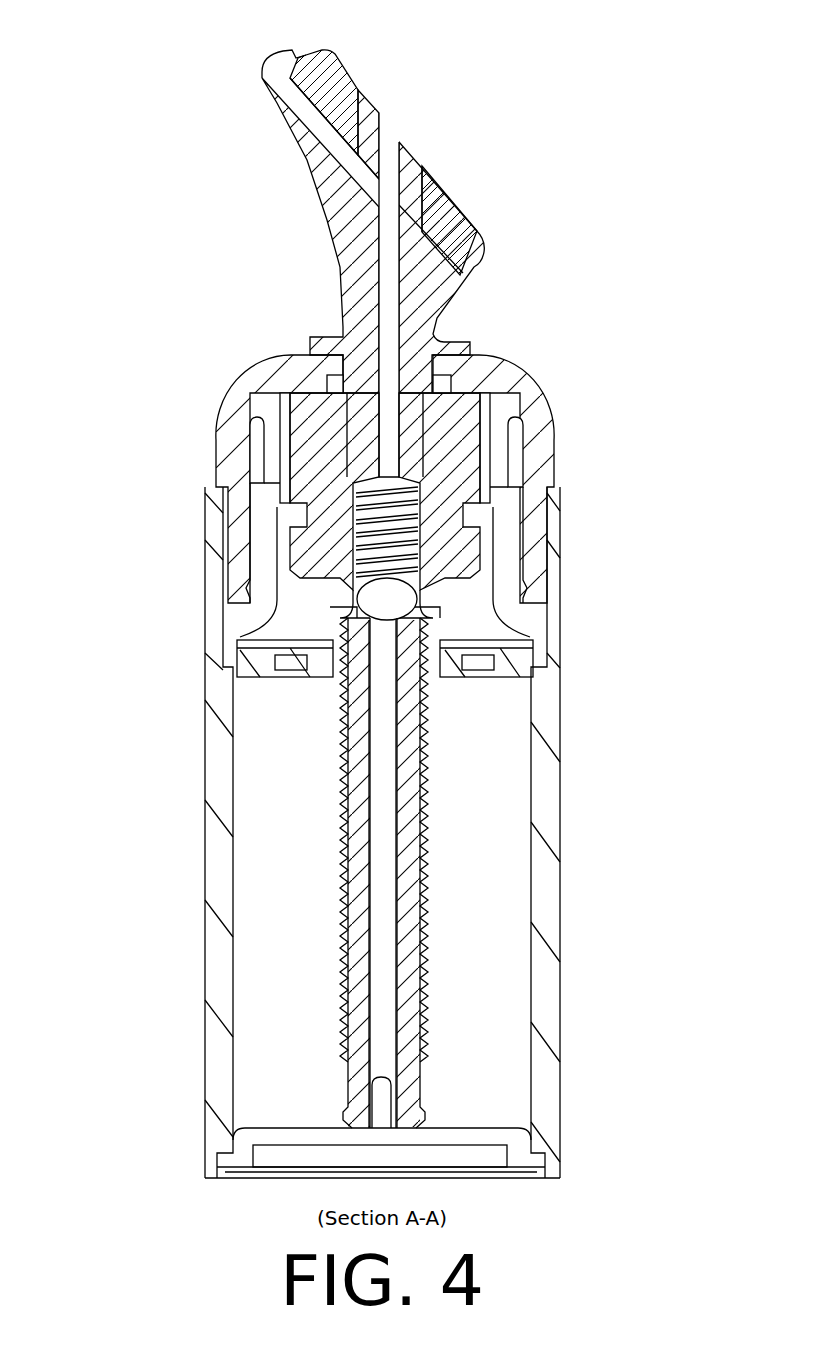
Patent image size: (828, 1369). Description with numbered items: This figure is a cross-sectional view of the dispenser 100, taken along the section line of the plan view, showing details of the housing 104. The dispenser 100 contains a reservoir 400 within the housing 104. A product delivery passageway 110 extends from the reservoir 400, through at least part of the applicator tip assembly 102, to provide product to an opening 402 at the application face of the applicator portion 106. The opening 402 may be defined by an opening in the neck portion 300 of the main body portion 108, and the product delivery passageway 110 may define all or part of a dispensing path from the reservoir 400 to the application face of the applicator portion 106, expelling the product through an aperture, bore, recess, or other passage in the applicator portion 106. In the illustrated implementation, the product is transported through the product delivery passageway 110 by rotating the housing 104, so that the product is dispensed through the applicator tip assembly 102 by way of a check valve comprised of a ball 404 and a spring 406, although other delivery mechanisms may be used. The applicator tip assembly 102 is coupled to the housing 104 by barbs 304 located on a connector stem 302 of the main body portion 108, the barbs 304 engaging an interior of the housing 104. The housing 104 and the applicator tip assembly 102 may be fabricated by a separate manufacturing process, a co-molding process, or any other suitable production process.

The dispenser 100 is at (314, 626).
The applicator tip assembly 102 is at (488, 165).
The housing 104 is at (205, 1003).
The applicator portion 106 is at (467, 240).
The main body portion 108 is at (343, 230).
The product delivery passageway 110 is at (380, 832).
The neck portion 300 is at (367, 107).
The connector stem 302 is at (363, 393).
The barbs 304 is at (350, 443).
The reservoir 400 is at (478, 1055).
The opening 402 is at (390, 133).
The ball 404 is at (387, 600).
The spring 406 is at (383, 533).